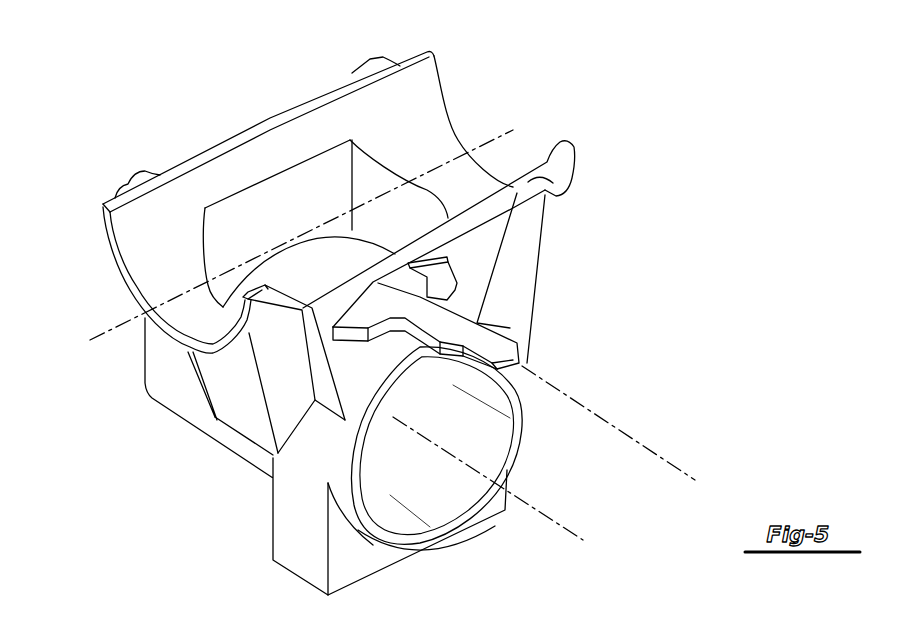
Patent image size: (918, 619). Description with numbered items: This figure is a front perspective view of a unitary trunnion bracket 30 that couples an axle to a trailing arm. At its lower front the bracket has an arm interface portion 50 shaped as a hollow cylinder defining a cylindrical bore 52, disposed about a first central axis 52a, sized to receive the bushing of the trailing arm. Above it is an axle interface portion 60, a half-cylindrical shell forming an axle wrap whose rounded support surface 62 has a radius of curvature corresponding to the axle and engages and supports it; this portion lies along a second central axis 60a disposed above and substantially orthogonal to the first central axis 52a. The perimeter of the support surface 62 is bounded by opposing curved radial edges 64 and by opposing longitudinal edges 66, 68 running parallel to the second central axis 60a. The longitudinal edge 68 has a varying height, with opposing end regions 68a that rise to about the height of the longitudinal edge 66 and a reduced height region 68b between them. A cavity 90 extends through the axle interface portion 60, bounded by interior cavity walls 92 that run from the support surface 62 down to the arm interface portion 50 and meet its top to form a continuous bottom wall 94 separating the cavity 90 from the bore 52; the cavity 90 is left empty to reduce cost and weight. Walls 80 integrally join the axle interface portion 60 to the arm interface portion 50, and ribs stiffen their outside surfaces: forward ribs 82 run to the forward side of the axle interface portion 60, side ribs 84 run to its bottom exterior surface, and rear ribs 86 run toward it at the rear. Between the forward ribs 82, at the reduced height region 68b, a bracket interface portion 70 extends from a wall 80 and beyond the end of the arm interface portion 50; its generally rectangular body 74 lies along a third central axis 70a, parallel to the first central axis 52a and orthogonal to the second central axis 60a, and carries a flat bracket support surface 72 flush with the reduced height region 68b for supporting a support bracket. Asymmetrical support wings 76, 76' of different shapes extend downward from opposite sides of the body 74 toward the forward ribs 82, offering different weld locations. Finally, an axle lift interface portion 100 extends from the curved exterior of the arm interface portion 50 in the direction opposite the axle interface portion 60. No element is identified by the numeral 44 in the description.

The trunnion bracket 30 is at (605, 126).
The trough wall 44 is at (145, 288).
The arm interface portion 50 is at (163, 388).
The bore 52 is at (430, 507).
The first central axis 52a is at (560, 530).
The axle interface portion 60 is at (103, 218).
The second central axis 60a is at (502, 130).
The support surface 62 is at (150, 256).
The radial edges 64 is at (444, 98).
The longitudinal edge 66 is at (333, 92).
The longitudinal edge 68 is at (572, 186).
The end regions 68a is at (574, 146).
The reduced height region 68b is at (322, 294).
The bracket interface portion 70 is at (514, 366).
The third central axis 70a is at (663, 453).
The bracket support surface 72 is at (427, 293).
The body 74 is at (519, 347).
The first support wing 76 is at (447, 390).
The second support wing 76' is at (538, 302).
The wall 80 is at (472, 263).
The forward ribs 82 is at (540, 247).
The side ribs 84 is at (222, 392).
The rear ribs 86 is at (135, 184).
The cavity 90 is at (280, 230).
The interior cavity walls 92 is at (305, 182).
The continuous bottom wall 94 is at (278, 268).
The axle lift interface portion 100 is at (383, 570).